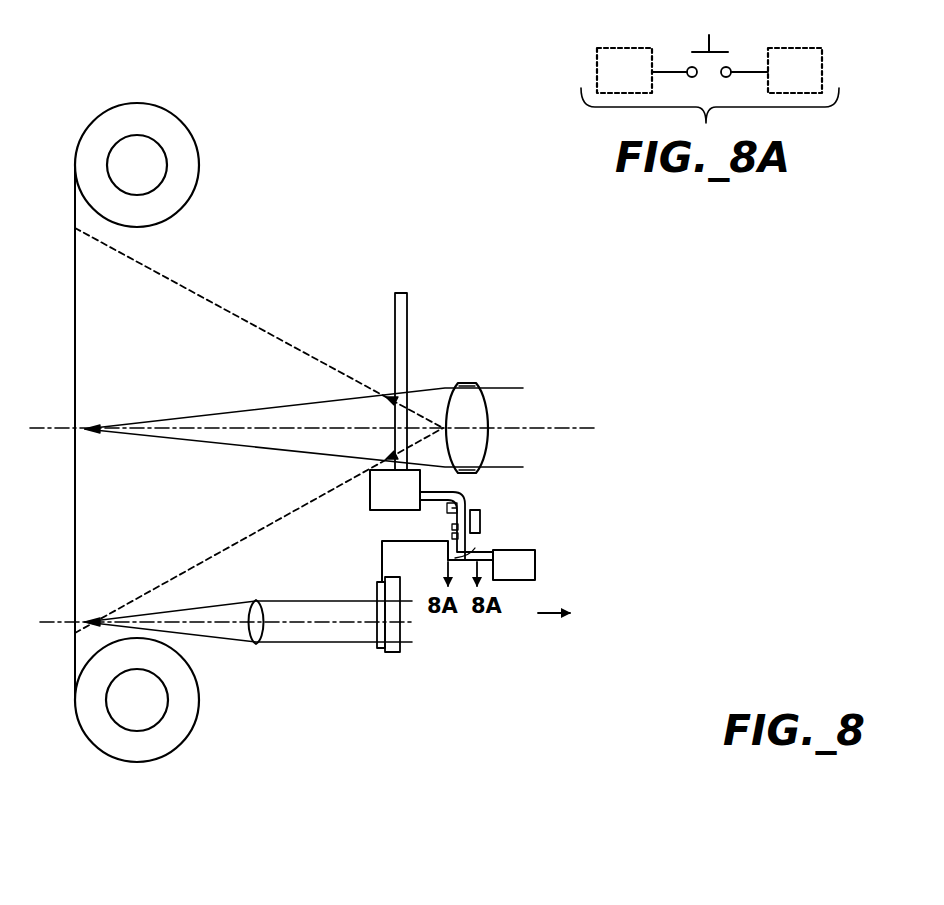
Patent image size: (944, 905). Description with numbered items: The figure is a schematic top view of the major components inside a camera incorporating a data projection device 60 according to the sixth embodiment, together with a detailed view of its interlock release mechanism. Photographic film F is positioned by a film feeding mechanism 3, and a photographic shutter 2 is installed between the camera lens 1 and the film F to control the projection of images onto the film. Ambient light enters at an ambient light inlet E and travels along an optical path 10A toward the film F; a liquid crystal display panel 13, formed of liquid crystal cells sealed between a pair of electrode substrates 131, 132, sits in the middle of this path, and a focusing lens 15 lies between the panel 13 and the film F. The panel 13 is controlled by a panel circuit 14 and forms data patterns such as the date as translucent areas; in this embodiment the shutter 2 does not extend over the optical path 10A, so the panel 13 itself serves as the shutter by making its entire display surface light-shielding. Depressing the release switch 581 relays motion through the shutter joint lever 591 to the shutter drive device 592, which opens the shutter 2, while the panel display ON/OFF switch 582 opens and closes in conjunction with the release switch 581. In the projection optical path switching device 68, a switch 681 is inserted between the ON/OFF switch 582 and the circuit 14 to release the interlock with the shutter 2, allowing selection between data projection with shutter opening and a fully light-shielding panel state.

In FIG. 8, the camera lens 1 is at (470, 382).
In FIG. 8, the photographic shutter 2 is at (407, 296).
In FIG. 8, the film feeding mechanism 3 is at (198, 163).
In FIG. 8, the photographic film F is at (75, 313).
In FIG. 8, the liquid crystal display panel 13 is at (387, 665).
In FIG. 8, the electrode substrate 131 is at (416, 639).
In FIG. 8, the electrode substrate 132 is at (381, 650).
In FIG. 8, the panel circuit 14 is at (527, 576).
In FIG. 8A, the panel circuit 14 is at (795, 70).
In FIG. 8, the focusing lens 15 is at (258, 645).
In FIG. 8, the optical path 10A is at (449, 624).
In FIG. 8, the data projection device 60 is at (593, 606).
In FIG. 8, the projection optical path switching device 68 is at (556, 457).
In FIG. 8, the release switch 581 is at (481, 521).
In FIG. 8, the panel display ON/OFF switch 582 is at (468, 553).
In FIG. 8A, the panel display ON/OFF switch 582 is at (624, 70).
In FIG. 8, the shutter joint lever 591 is at (392, 531).
In FIG. 8, the shutter drive device 592 is at (375, 512).
In FIG. 8A, the switch 681 is at (712, 50).
In FIG. 8, the ambient light inlet E is at (543, 615).